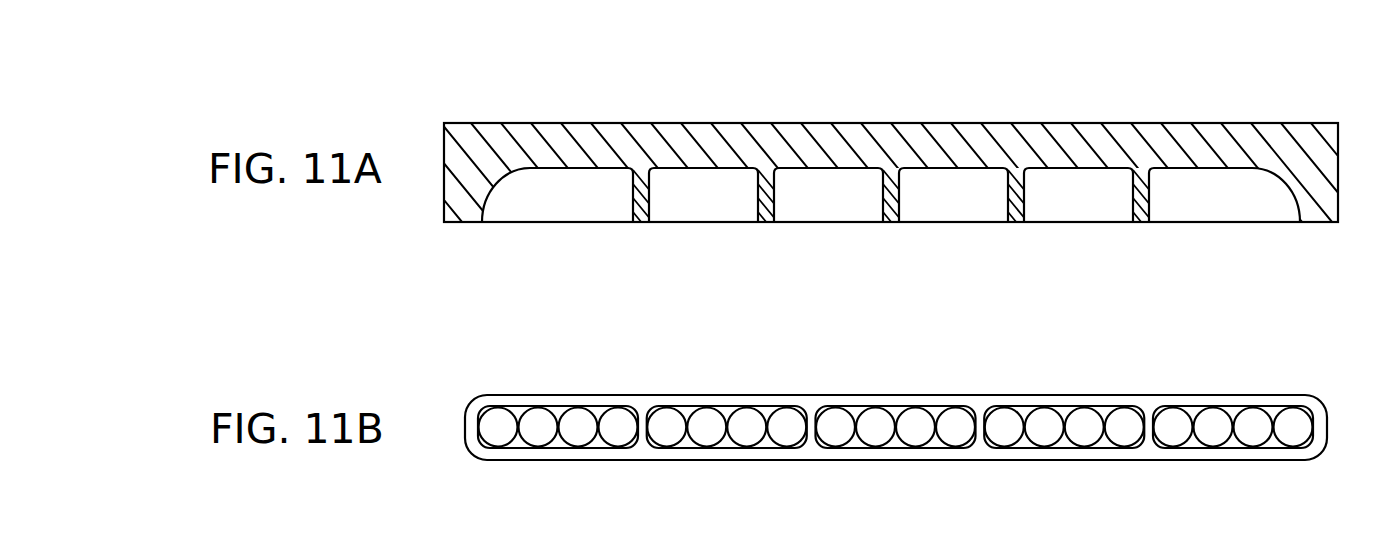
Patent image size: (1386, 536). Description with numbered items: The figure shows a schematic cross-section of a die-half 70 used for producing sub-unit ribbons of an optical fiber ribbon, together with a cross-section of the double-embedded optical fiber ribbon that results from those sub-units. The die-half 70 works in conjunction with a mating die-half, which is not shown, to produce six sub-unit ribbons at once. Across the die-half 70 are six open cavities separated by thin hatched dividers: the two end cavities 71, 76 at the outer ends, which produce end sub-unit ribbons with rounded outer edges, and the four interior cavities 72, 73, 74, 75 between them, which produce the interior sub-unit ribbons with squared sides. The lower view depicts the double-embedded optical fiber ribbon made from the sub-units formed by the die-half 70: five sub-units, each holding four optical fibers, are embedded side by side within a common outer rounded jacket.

The die-half 70 is at (428, 100).
The end cavity 71 is at (552, 203).
The interior cavity 72 is at (701, 203).
The interior cavity 73 is at (808, 203).
The interior cavity 74 is at (942, 203).
The interior cavity 75 is at (1062, 203).
The end cavity 76 is at (1207, 215).